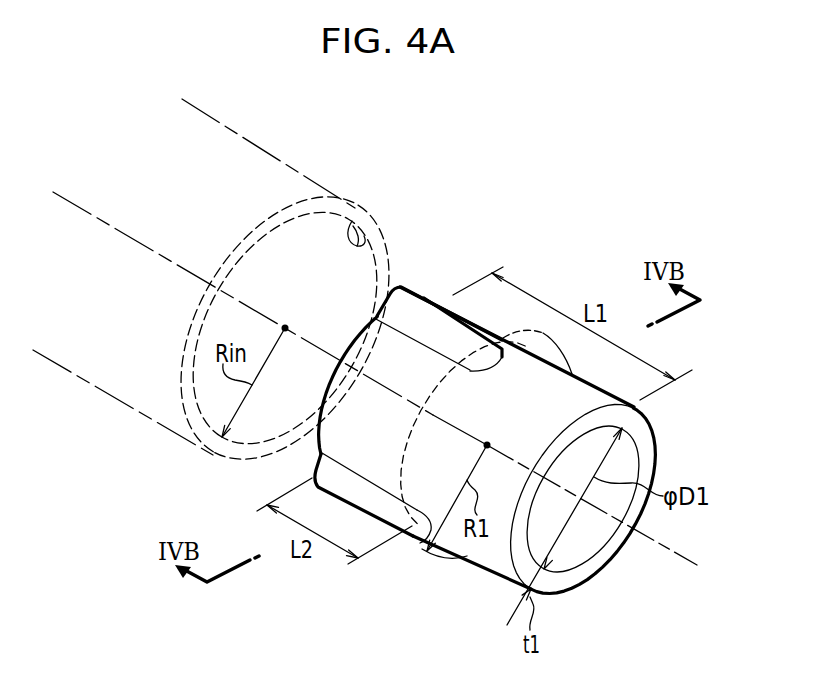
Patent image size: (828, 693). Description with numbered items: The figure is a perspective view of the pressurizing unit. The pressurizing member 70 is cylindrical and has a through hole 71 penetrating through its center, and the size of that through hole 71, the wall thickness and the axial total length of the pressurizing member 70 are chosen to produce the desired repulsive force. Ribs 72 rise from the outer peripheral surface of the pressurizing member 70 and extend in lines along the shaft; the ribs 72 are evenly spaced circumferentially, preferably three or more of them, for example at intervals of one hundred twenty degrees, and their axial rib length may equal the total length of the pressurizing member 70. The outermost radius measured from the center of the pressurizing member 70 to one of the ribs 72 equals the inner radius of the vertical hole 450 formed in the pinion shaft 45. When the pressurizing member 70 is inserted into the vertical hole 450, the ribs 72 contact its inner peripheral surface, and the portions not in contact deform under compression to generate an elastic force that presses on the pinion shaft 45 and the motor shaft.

The pinion shaft 45 is at (275, 152).
The vertical hole 450 is at (351, 219).
The pressurizing member 70 is at (656, 455).
The through hole 71 is at (588, 553).
The ribs 72 is at (362, 493).